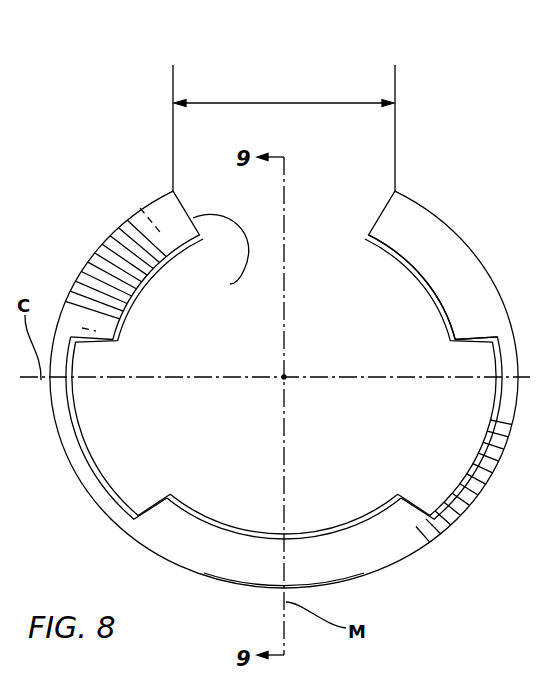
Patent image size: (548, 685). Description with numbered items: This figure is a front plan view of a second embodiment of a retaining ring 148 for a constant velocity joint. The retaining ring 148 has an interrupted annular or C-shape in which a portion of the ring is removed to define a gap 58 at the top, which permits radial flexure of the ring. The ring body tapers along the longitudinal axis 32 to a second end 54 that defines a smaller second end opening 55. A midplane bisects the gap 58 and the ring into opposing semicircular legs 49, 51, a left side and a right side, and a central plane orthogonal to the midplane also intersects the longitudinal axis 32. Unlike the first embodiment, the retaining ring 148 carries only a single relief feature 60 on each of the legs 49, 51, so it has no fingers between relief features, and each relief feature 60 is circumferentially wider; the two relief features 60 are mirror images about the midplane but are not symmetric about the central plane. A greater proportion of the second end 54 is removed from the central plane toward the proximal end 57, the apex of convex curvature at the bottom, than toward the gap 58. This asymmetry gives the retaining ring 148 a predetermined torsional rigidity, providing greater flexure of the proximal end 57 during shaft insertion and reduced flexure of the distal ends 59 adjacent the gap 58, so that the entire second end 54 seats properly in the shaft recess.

The gap 58 is at (284, 103).
The retaining ring 148 is at (124, 200).
The second end opening 55 is at (378, 287).
The second end 54 is at (438, 296).
The distal ends 59 is at (380, 217).
The relief features 60 is at (97, 334).
The longitudinal axis 32 is at (286, 375).
The semicircular leg 49 is at (173, 532).
The semicircular leg 51 is at (378, 552).
The proximal end 57 is at (284, 589).